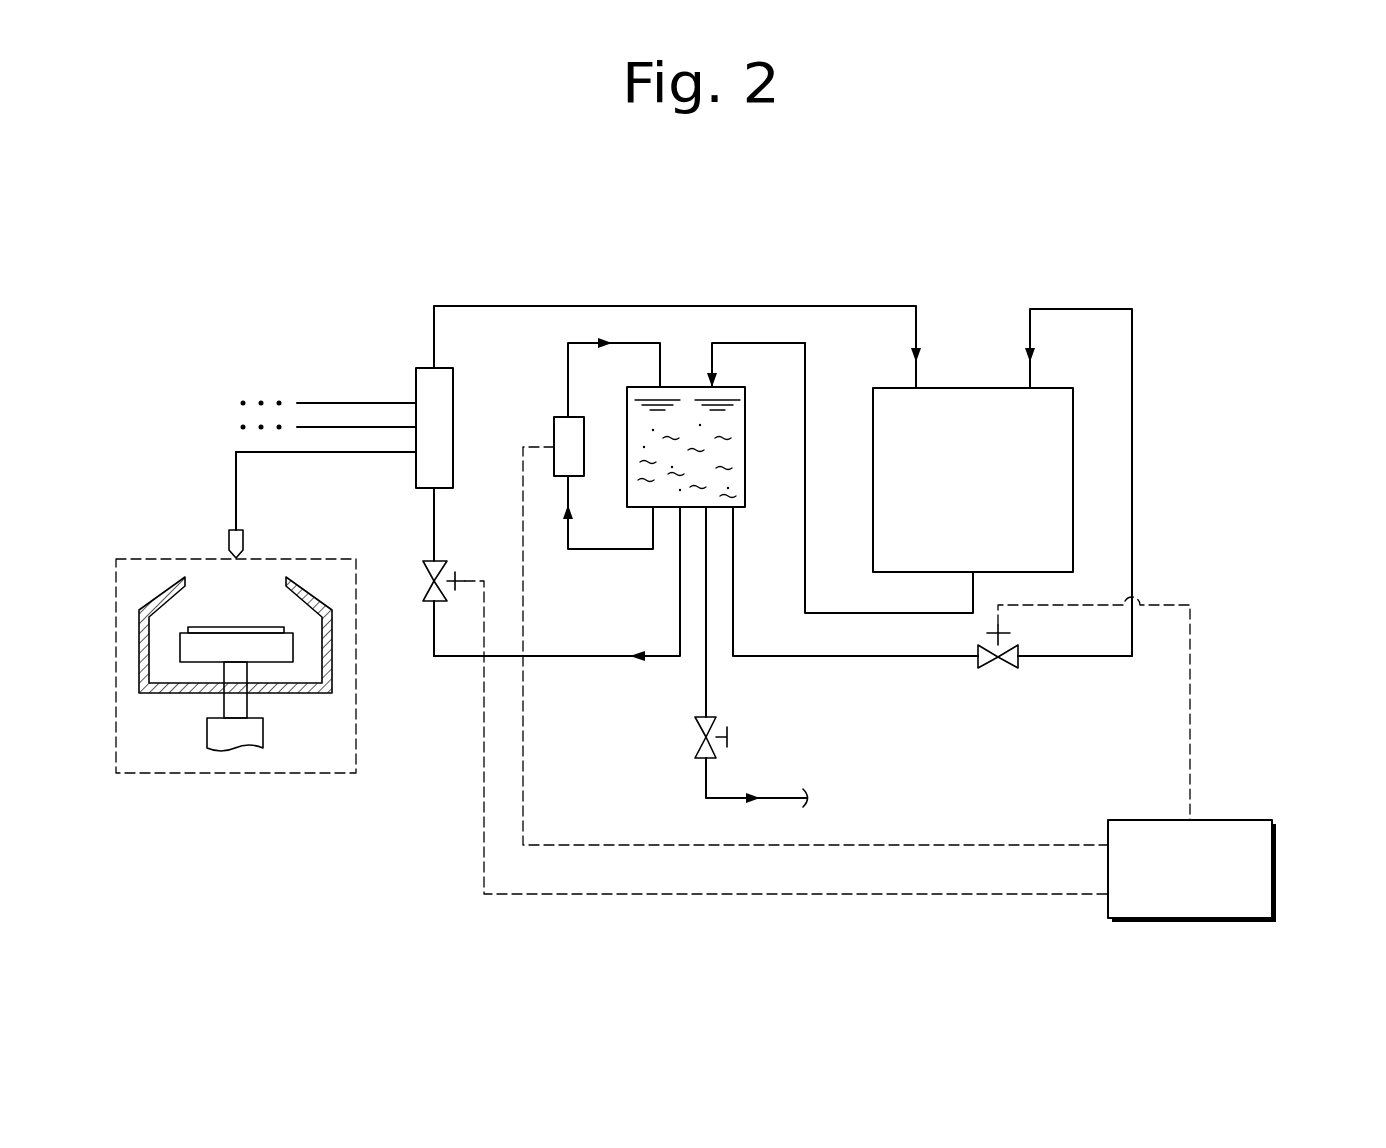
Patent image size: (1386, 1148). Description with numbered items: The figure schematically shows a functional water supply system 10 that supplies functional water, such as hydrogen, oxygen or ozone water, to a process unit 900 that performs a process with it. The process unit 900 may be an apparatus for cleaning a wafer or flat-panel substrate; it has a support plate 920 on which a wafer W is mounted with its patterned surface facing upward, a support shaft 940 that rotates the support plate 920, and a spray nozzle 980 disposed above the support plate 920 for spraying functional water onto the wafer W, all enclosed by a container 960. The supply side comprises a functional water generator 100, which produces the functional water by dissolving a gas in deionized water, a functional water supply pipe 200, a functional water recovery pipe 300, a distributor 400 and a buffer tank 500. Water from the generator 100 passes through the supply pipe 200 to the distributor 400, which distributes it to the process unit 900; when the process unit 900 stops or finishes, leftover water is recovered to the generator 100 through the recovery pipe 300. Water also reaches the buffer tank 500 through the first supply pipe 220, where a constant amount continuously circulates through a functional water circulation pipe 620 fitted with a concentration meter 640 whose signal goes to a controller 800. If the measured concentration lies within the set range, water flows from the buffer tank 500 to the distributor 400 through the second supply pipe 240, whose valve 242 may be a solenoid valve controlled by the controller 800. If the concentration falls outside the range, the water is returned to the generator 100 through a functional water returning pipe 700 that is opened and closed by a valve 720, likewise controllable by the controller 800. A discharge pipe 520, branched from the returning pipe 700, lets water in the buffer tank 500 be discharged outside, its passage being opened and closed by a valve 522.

The functional water supply system 10 is at (898, 221).
The functional water generator 100 is at (1073, 443).
The functional water supply pipe 200 is at (680, 740).
The first supply pipe 220 is at (805, 590).
The second supply pipe 240 is at (612, 658).
The valve 242 is at (440, 561).
The functional water recovery pipe 300 is at (675, 306).
The distributor 400 is at (430, 368).
The buffer tank 500 is at (745, 387).
The discharge pipe 520 is at (710, 690).
The valve 522 is at (728, 735).
The functional water circulation pipe 620 is at (568, 362).
The concentration meter 640 is at (554, 420).
The functional water returning pipe 700 is at (900, 657).
The valve 720 is at (1003, 668).
The controller 800 is at (1272, 868).
The process unit 900 is at (205, 713).
The support plate 920 is at (180, 648).
The support shaft 940 is at (220, 702).
The container 960 is at (323, 693).
The spray nozzle 980 is at (243, 540).
The wafer W is at (235, 627).